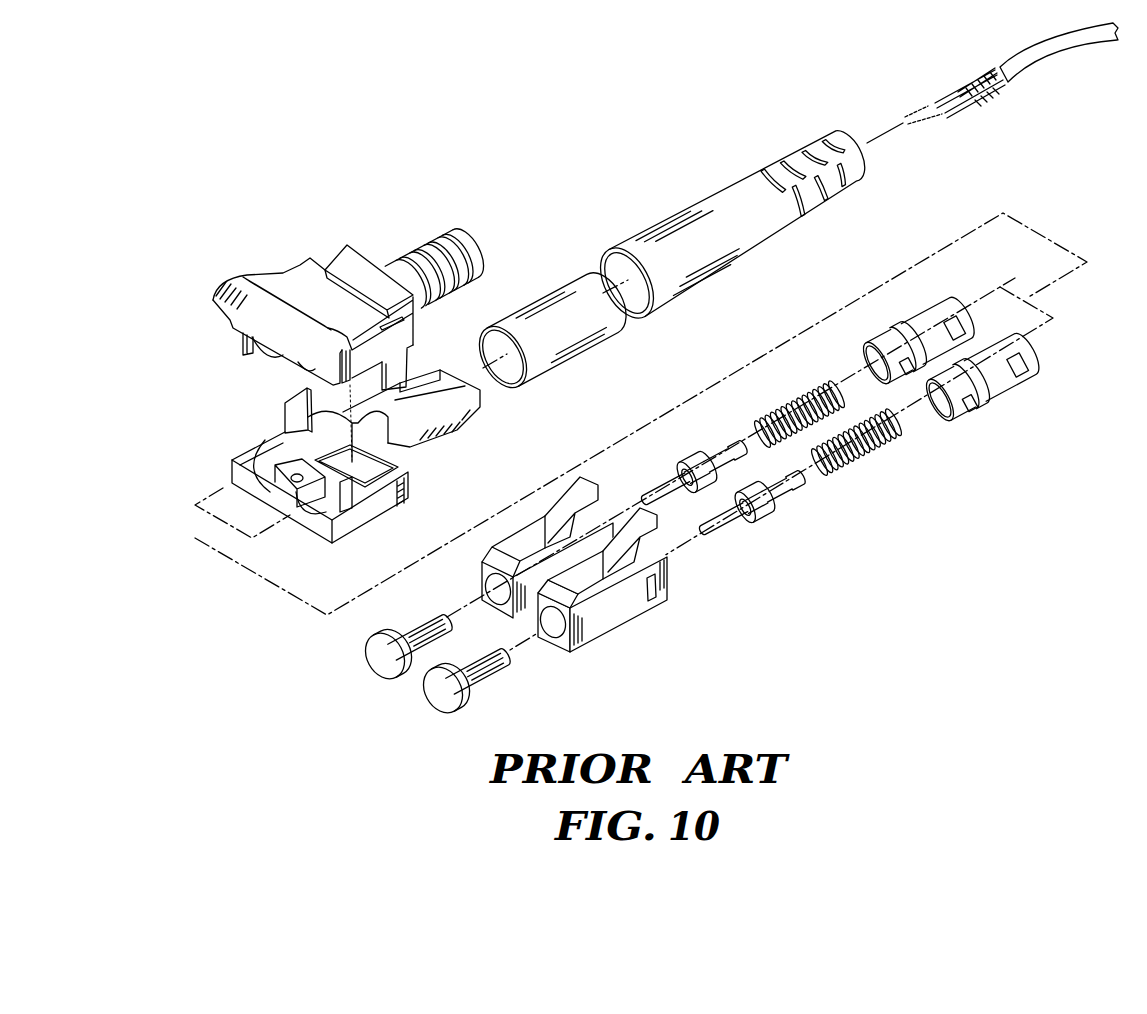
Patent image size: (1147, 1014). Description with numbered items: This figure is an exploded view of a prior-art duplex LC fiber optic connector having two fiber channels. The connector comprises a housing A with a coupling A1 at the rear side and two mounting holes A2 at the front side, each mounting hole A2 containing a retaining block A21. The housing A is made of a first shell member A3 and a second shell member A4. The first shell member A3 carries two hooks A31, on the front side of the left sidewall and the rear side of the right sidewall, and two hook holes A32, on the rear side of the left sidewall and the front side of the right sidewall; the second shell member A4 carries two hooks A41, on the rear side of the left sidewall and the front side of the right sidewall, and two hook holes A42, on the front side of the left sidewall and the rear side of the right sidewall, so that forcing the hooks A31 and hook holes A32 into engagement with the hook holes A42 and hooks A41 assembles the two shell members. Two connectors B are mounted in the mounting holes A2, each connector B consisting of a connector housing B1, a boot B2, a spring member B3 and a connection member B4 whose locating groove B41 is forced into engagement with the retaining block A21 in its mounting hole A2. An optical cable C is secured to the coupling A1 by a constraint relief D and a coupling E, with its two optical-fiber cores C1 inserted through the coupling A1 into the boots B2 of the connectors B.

The housing A is at (207, 418).
The coupling A1 is at (460, 240).
The mounting holes A2 is at (248, 470).
The retaining block A21 is at (317, 493).
The first shell member A3 is at (305, 280).
The hooks A31 is at (250, 338).
The hook holes A32 is at (404, 318).
The second shell member A4 is at (360, 515).
The hooks A41 is at (293, 418).
The hook holes A42 is at (395, 493).
The connectors B is at (498, 693).
The connector housing B1 is at (567, 647).
The boot B2 is at (706, 447).
The spring member B3 is at (870, 457).
The connection member B4 is at (940, 313).
The locating groove B41 is at (1027, 363).
The optical cable C is at (1101, 53).
The optical-fiber cores C1 is at (932, 105).
The constraint relief D is at (700, 207).
The coupling E is at (553, 293).